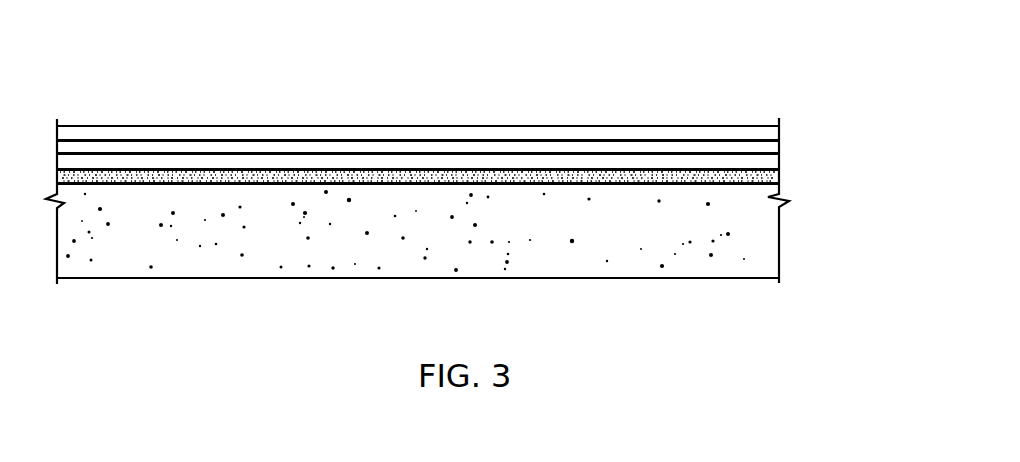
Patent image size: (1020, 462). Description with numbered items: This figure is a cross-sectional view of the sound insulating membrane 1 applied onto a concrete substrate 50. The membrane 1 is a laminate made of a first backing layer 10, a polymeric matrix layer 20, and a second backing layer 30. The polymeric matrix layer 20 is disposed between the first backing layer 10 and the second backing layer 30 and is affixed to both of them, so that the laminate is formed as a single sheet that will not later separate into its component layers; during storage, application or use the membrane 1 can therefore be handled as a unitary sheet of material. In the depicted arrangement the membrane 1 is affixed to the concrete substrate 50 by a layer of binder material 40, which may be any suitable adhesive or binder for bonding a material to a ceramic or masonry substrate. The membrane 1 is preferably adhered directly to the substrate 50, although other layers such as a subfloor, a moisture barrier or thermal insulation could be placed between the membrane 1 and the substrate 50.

The sound insulating membrane 1 is at (165, 71).
The first backing layer 10 is at (490, 133).
The polymeric matrix layer 20 is at (560, 145).
The second backing layer 30 is at (632, 160).
The layer of binder material 40 is at (777, 175).
The concrete substrate 50 is at (727, 268).